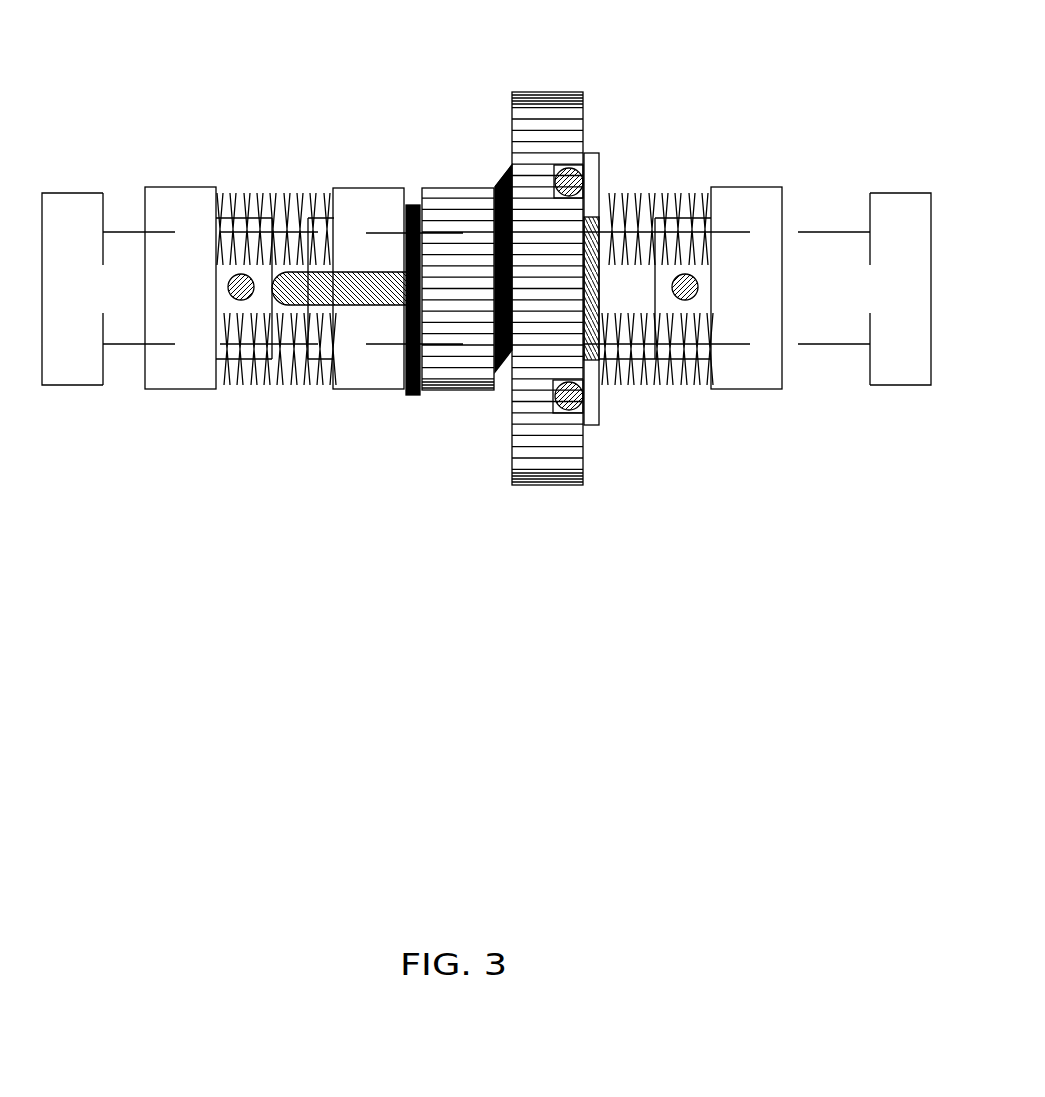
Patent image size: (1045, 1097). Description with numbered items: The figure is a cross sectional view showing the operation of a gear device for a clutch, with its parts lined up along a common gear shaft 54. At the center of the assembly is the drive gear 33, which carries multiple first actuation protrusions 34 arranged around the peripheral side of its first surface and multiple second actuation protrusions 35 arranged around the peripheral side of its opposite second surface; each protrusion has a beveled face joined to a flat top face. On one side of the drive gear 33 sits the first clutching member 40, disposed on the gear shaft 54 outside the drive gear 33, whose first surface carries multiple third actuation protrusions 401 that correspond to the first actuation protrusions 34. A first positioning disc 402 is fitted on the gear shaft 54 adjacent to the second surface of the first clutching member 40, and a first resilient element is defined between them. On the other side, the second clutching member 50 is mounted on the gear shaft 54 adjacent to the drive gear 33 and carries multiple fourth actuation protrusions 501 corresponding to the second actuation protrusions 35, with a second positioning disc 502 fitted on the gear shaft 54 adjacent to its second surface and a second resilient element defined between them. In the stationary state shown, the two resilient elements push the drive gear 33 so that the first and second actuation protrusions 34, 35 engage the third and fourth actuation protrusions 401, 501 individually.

The first positioning disc 402 is at (178, 283).
The first clutching member 40 is at (362, 237).
The first actuation protrusions 34 is at (404, 232).
The third actuation protrusions 401 is at (405, 357).
The drive gear 33 is at (455, 355).
The second actuation protrusions 35 is at (503, 357).
The fourth actuation protrusions 501 is at (497, 181).
The second clutching member 50 is at (555, 130).
The second positioning disc 502 is at (750, 329).
The gear shaft 54 is at (820, 293).